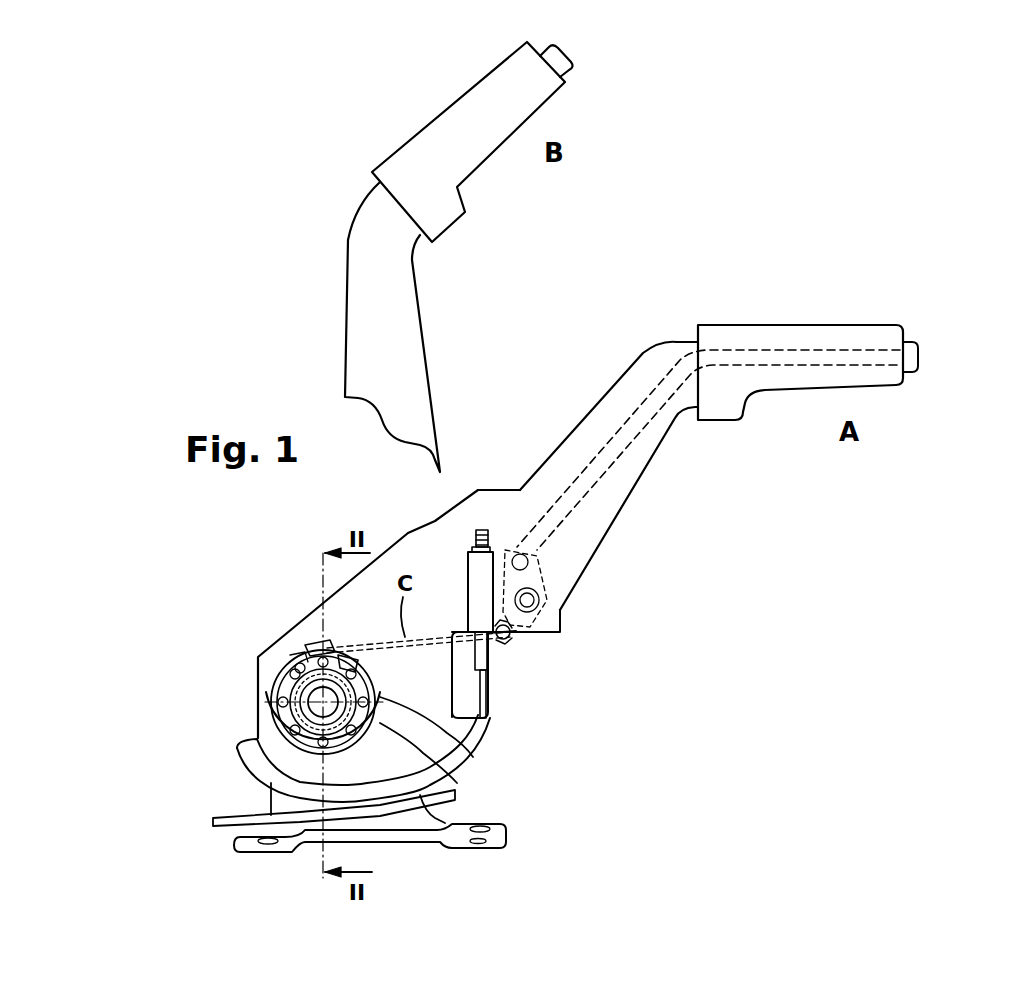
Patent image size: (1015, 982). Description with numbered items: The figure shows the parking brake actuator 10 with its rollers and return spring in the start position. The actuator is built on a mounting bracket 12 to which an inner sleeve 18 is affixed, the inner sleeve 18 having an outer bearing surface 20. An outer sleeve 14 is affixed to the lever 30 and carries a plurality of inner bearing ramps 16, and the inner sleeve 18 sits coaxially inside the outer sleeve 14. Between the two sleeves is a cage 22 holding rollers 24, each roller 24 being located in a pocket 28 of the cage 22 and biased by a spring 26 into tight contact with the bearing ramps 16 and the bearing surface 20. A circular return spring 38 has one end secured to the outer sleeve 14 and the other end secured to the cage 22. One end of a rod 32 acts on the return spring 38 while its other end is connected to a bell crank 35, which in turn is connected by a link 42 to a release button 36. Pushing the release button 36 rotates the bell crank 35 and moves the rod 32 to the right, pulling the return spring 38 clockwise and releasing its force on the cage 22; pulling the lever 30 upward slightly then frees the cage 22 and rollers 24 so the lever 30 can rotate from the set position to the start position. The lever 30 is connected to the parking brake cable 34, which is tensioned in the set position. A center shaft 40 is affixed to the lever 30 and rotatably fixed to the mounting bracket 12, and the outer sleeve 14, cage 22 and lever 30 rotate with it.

The parking brake actuator 10 is at (245, 675).
The mounting bracket 12 is at (495, 833).
The outer sleeve 14 is at (238, 750).
The inner bearing ramps 16 is at (242, 779).
The inner sleeve 18 is at (490, 735).
The outer bearing surface 20 is at (275, 718).
The cage 22 is at (480, 768).
The rollers 24 is at (295, 670).
The spring 26 is at (280, 693).
The pocket 28 is at (345, 663).
The lever 30 is at (413, 330).
The rod 32 is at (317, 640).
The parking brake cable 34 is at (225, 823).
The bell crank 35 is at (517, 642).
The release button 36 is at (913, 362).
The return spring 38 is at (302, 657).
The center shaft 40 is at (293, 682).
The link 42 is at (668, 373).